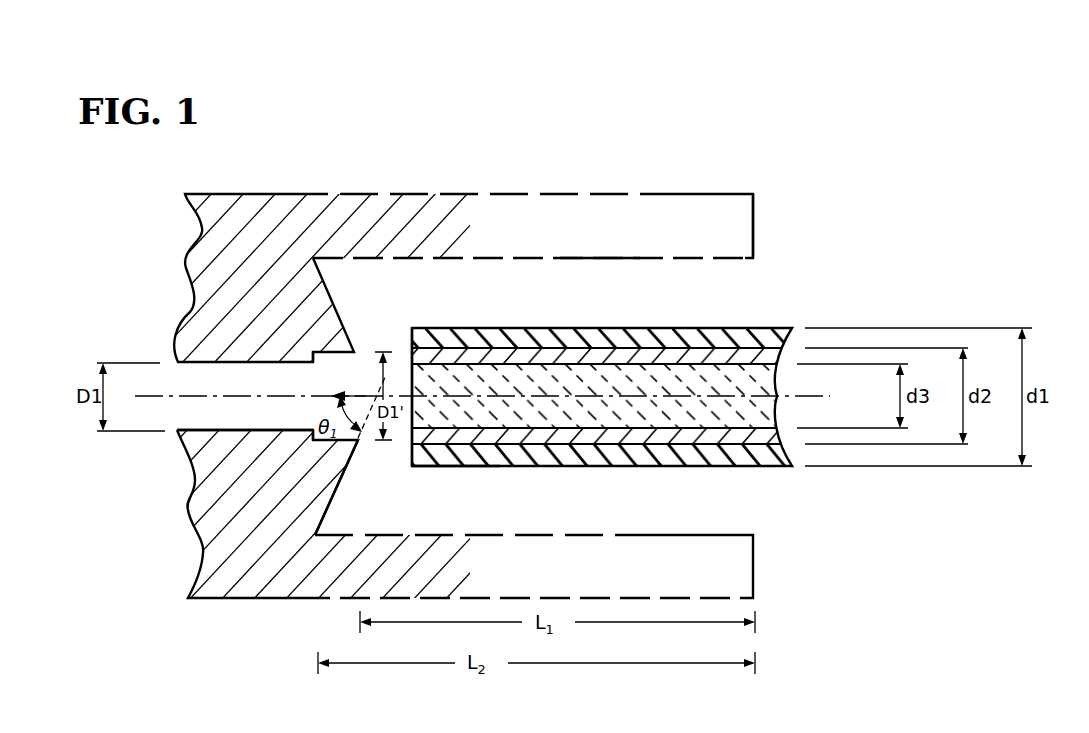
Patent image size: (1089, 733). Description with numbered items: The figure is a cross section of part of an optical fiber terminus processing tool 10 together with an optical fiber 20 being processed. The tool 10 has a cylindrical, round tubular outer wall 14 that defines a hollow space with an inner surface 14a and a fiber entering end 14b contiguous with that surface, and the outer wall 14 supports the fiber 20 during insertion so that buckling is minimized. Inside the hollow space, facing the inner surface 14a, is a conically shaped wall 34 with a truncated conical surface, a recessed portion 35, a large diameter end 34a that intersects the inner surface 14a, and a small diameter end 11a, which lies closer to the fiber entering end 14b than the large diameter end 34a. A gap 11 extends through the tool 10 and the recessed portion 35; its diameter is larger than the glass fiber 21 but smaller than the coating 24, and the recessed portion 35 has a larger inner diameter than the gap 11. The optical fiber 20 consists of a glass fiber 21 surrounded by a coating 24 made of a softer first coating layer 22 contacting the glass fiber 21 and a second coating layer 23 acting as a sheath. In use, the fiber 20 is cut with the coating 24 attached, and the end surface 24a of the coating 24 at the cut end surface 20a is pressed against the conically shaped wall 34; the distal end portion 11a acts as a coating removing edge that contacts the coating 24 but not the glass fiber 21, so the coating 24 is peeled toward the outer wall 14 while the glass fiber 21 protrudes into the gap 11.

The optical fiber terminus processing tool 10 is at (289, 122).
The gap 11 is at (360, 373).
The small diameter end 11a is at (357, 443).
The outer wall 14 is at (715, 205).
The inner surface 14a is at (613, 258).
The fiber entering end 14b is at (753, 217).
The optical fiber 20 is at (930, 210).
The cut end surface 20a is at (412, 350).
The glass fiber 21 is at (773, 390).
The first coating layer 22 is at (782, 357).
The second coating layer 23 is at (747, 327).
The coating 24 is at (672, 333).
The end surface of the coating 24a is at (412, 466).
The conically shaped wall 34 is at (356, 355).
The large diameter end 34a is at (317, 533).
The recessed portion 35 is at (196, 440).